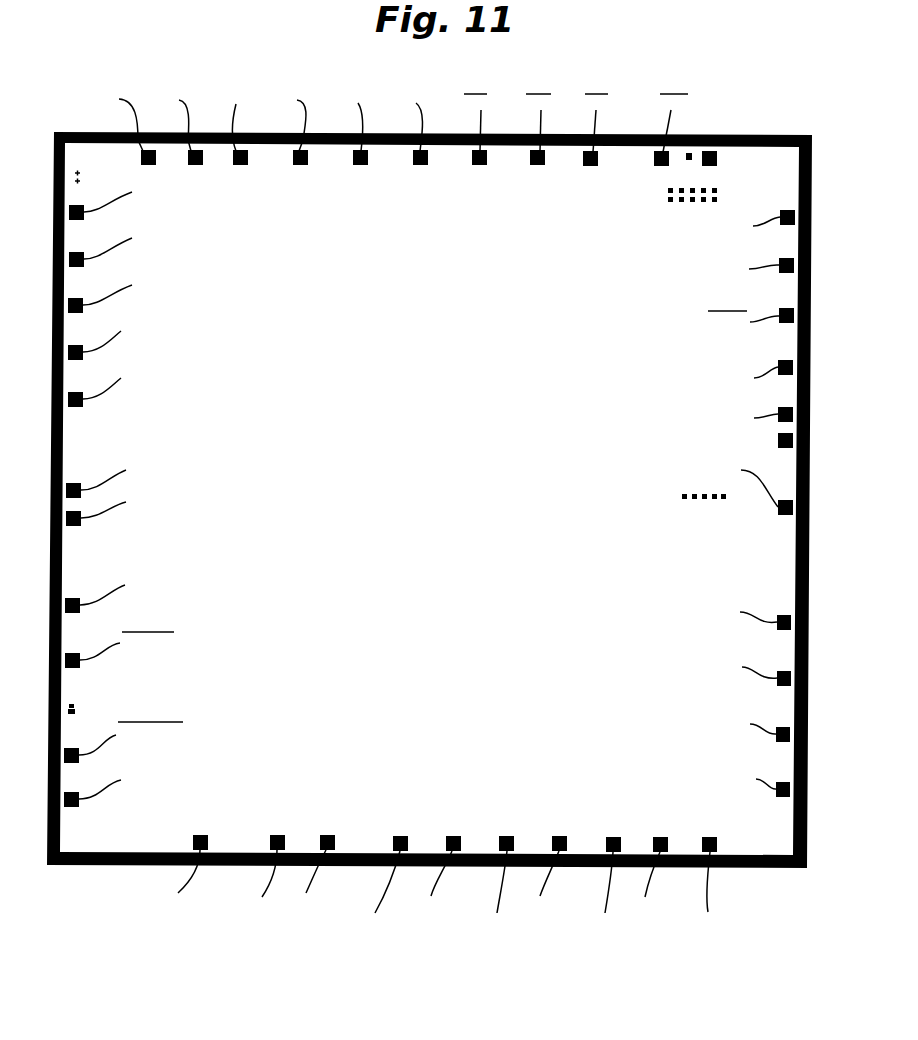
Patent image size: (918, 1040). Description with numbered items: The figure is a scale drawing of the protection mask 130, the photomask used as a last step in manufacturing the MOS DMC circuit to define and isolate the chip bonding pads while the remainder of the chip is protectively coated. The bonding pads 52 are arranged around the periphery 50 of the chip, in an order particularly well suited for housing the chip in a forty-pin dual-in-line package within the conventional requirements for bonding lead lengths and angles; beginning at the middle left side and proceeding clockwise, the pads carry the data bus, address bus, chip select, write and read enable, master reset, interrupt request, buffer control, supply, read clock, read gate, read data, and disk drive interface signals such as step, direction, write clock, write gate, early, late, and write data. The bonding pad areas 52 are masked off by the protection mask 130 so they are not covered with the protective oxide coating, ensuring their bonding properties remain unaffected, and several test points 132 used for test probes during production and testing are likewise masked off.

The protection mask 130 is at (750, 110).
The test points 132 is at (675, 207).
The periphery 50 is at (447, 153).
The bonding pads 52 is at (407, 838).